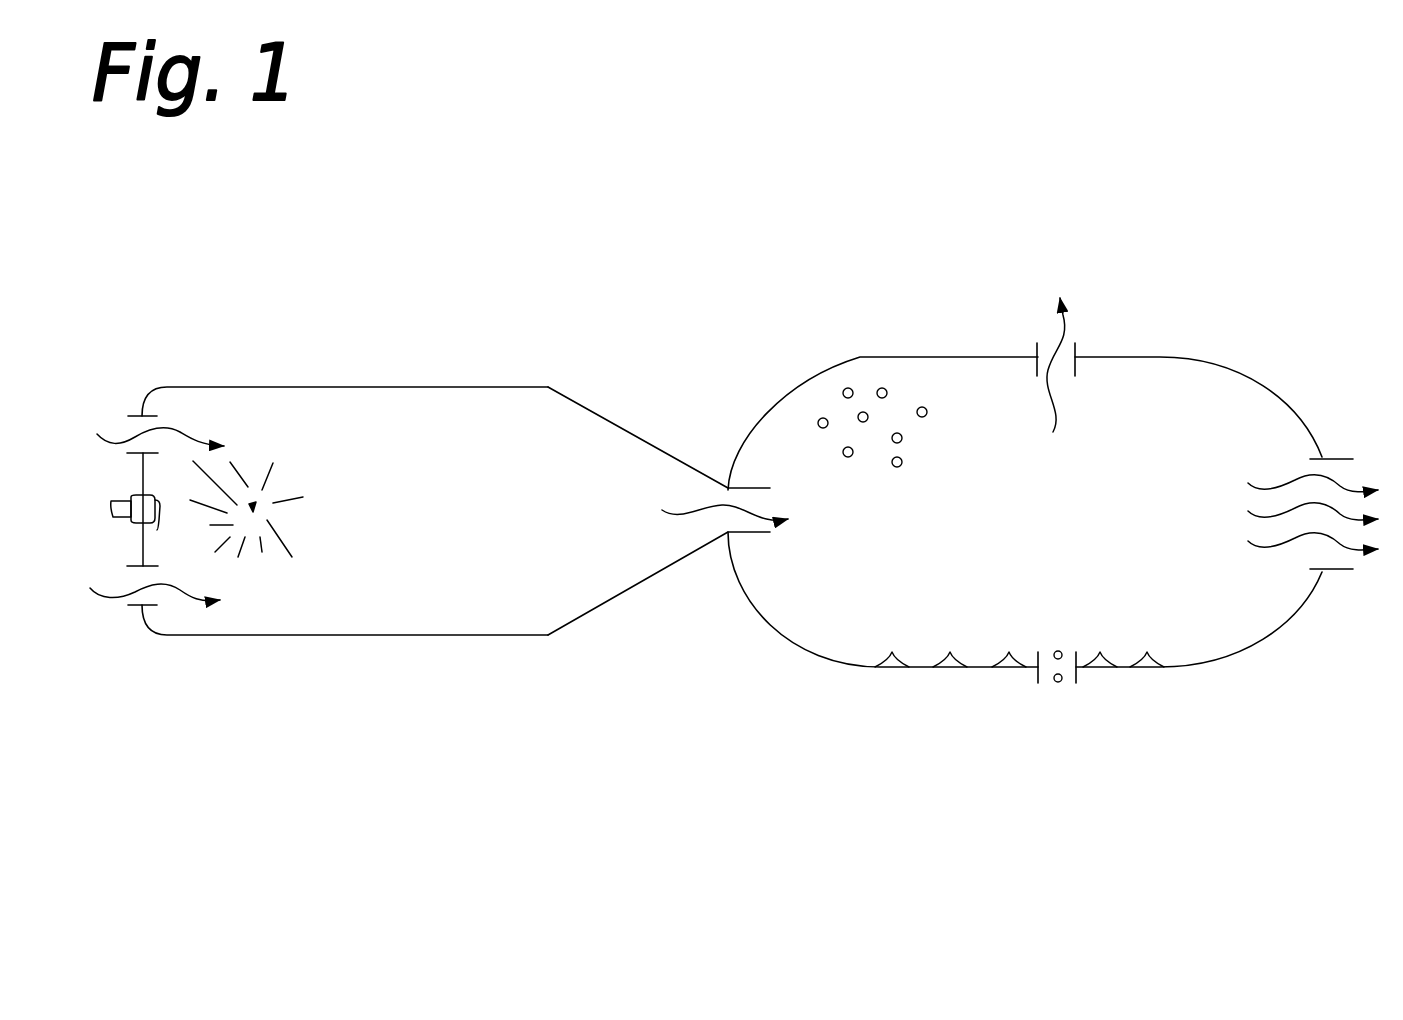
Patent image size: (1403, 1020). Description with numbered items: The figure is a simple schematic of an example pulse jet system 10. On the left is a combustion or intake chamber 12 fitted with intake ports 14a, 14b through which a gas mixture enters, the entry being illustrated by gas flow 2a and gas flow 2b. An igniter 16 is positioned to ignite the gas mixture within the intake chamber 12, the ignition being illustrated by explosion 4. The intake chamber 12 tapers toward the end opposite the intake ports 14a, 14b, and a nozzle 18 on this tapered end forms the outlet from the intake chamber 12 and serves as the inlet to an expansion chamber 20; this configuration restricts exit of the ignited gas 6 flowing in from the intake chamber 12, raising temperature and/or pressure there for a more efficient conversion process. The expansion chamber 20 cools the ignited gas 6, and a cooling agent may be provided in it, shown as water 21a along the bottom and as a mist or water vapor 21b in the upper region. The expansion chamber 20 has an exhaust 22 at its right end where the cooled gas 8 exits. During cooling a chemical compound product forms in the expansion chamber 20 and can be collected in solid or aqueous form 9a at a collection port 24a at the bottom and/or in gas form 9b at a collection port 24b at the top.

The gas flow 2a is at (203, 445).
The gas flow 2b is at (193, 598).
The explosion 4 is at (303, 497).
The ignited gas 6 is at (763, 520).
The cooled gas 8 is at (1268, 517).
The chemical compound product in solid or aqueous form 9a is at (1065, 698).
The chemical compound product in gas form 9b is at (1056, 328).
The pulse jet system 10 is at (1099, 282).
The intake chamber 12 is at (333, 387).
The intake port 14a is at (135, 415).
The intake port 14b is at (142, 606).
The igniter 16 is at (157, 530).
The nozzle 18 is at (760, 532).
The expansion chamber 20 is at (818, 373).
The water 21a is at (940, 648).
The water vapor 21b is at (930, 441).
The exhaust 22 is at (1333, 458).
The collection port 24a is at (1077, 652).
The collection port 24b is at (1077, 343).